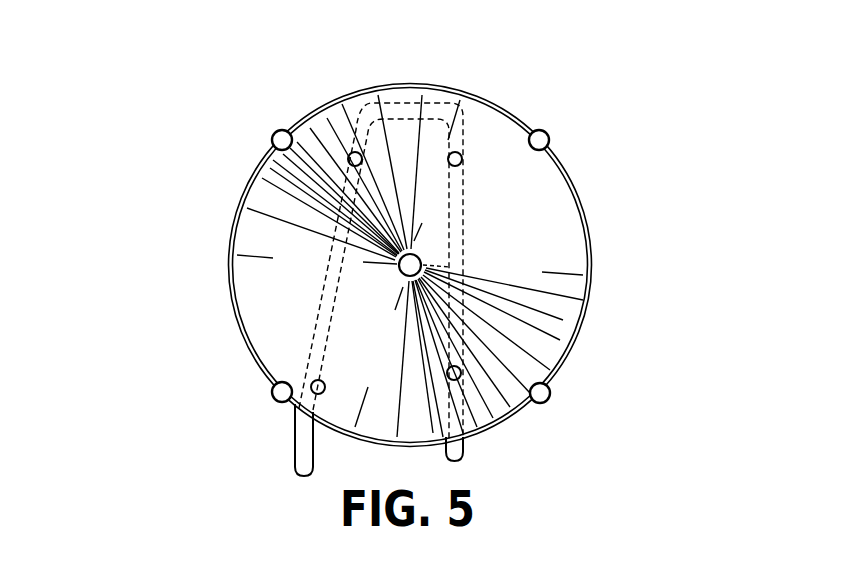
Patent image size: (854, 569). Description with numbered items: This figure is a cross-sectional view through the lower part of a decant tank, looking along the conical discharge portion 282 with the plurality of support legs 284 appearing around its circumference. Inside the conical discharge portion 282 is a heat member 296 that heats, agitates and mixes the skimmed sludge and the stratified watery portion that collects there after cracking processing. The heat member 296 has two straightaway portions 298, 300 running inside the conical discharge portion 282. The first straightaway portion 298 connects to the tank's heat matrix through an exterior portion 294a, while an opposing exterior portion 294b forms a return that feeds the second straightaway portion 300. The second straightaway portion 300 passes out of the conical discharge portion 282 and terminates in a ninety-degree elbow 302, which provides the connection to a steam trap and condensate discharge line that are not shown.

The conical discharge portion 282 is at (232, 243).
The support legs 284 is at (274, 134).
The exterior portion 294a is at (294, 440).
The opposing exterior portion 294b is at (412, 104).
The heat member 296 is at (282, 294).
The straightaway portion 298 is at (322, 322).
The second straightaway portion 300 is at (460, 307).
The 90° elbow 302 is at (464, 452).